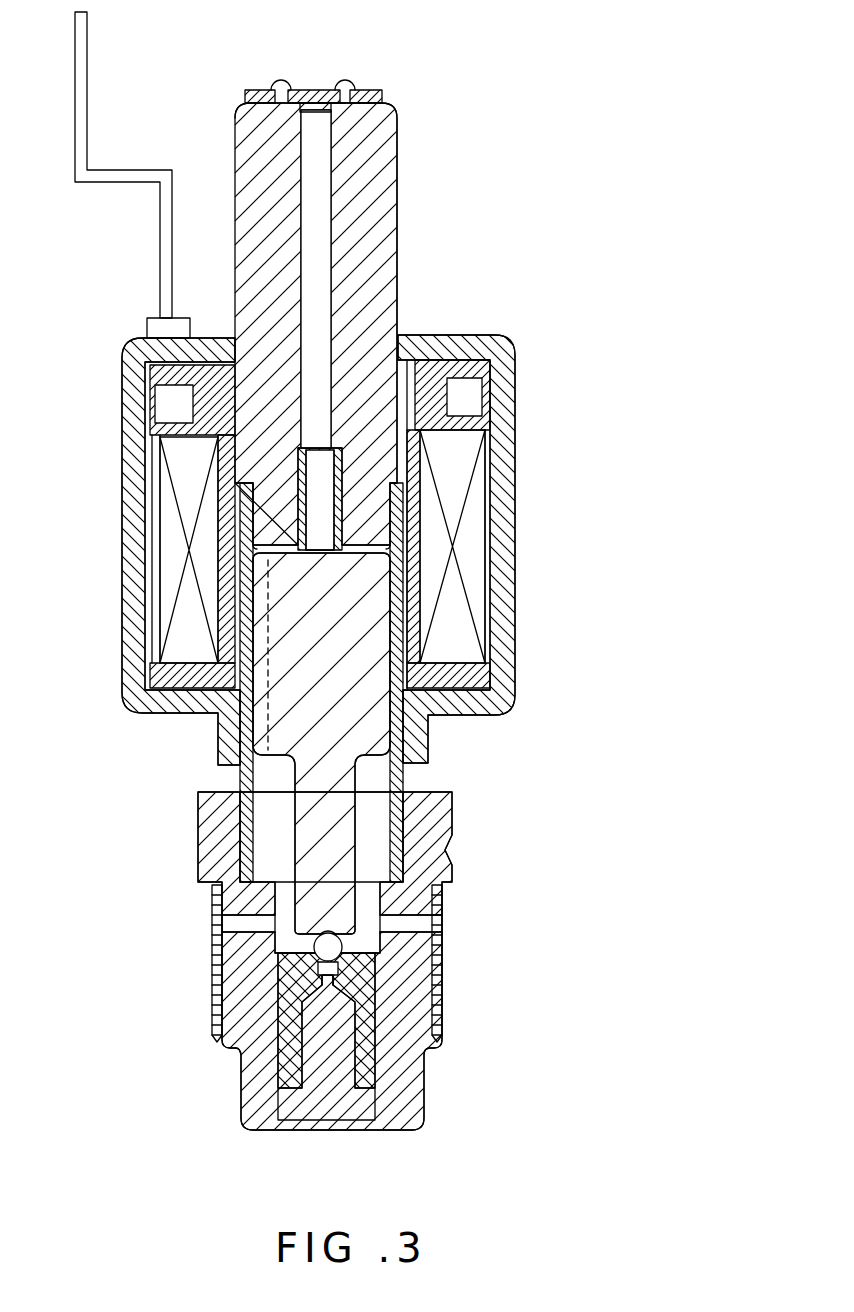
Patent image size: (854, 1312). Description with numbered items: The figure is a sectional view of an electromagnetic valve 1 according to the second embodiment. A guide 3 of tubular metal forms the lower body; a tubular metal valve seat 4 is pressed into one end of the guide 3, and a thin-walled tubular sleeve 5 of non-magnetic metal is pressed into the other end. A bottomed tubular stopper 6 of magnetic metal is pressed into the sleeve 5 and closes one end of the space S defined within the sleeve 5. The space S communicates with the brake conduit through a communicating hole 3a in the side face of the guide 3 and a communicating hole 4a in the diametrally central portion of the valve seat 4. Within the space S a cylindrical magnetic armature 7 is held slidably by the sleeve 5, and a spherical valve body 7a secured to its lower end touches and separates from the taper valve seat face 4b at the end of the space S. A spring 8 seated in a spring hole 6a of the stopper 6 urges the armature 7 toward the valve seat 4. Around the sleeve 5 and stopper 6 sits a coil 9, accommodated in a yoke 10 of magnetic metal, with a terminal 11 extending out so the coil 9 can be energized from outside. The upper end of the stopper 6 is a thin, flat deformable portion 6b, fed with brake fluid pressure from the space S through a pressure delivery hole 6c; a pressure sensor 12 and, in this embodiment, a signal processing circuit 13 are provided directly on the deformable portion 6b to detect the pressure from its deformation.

The electromagnetic valve 1 is at (103, 527).
The guide 3 is at (235, 1020).
The communicating hole 3a is at (400, 917).
The valve seat 4 is at (370, 1050).
The communicating hole 4a is at (332, 1000).
The taper valve seat face 4b is at (332, 968).
The sleeve 5 is at (245, 745).
The stopper 6 is at (383, 241).
The spring hole 6a is at (322, 475).
The deformable portion 6b is at (335, 118).
The pressure delivery hole 6c is at (315, 168).
The armature 7 is at (270, 612).
The valve body 7a is at (316, 947).
The spring 8 is at (338, 510).
The coil 9 is at (180, 470).
The yoke 10 is at (125, 405).
The terminal 11 is at (88, 52).
The pressure sensor 12 is at (325, 88).
The signal processing circuit 13 is at (258, 88).
The space S is at (272, 790).